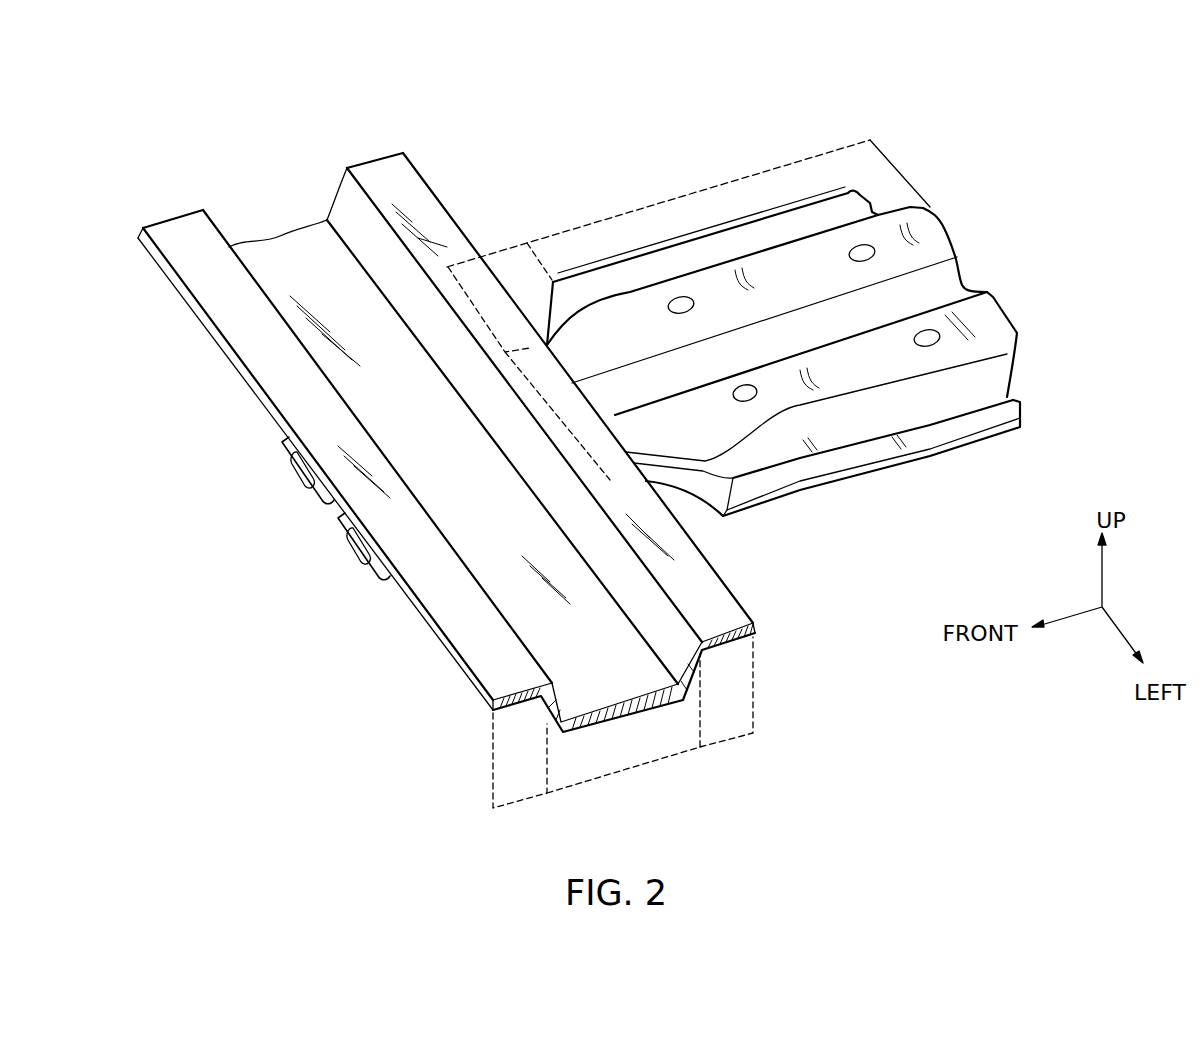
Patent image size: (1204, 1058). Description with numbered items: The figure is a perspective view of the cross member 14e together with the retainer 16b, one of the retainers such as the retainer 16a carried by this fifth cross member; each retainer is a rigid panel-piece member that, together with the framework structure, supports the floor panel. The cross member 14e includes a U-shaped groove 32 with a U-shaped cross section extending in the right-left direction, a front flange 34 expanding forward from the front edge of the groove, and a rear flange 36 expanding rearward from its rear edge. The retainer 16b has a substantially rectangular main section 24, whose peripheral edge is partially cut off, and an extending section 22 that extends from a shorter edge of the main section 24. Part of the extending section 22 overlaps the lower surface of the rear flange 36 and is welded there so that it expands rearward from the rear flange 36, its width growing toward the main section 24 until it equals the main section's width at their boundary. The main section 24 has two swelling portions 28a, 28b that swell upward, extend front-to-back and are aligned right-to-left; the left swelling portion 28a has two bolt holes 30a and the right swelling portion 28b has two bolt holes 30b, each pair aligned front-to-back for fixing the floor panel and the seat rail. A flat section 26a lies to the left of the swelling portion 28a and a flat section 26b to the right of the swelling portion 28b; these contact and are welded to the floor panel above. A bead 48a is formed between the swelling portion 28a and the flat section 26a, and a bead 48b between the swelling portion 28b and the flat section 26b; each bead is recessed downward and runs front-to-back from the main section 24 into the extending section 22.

The cross member 14e is at (411, 203).
The retainer 16a is at (350, 543).
The retainer 16b is at (816, 503).
The extending section 22 is at (522, 244).
The main section 24 is at (686, 194).
The flat section 26a is at (857, 457).
The flat section 26b is at (728, 232).
The swelling portion 28a is at (844, 414).
The swelling portion 28b is at (789, 240).
The bolt hole 30a is at (740, 402).
The bolt hole 30b is at (679, 297).
The U-shaped groove 32 is at (635, 770).
The front flange 34 is at (530, 800).
The rear flange 36 is at (735, 740).
The bead 48a is at (767, 463).
The bead 48b is at (605, 290).